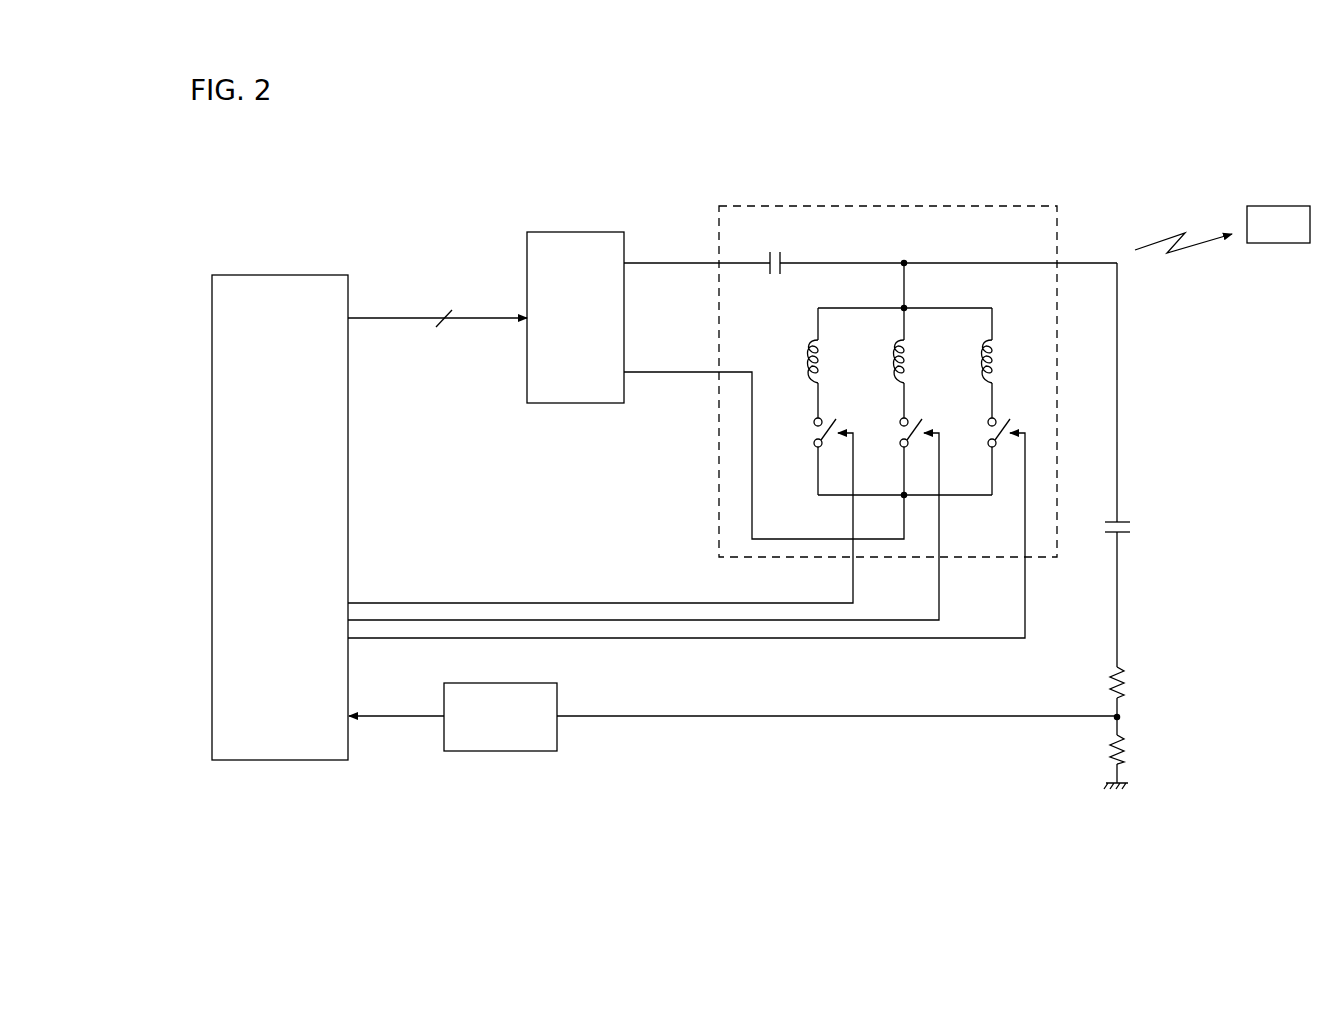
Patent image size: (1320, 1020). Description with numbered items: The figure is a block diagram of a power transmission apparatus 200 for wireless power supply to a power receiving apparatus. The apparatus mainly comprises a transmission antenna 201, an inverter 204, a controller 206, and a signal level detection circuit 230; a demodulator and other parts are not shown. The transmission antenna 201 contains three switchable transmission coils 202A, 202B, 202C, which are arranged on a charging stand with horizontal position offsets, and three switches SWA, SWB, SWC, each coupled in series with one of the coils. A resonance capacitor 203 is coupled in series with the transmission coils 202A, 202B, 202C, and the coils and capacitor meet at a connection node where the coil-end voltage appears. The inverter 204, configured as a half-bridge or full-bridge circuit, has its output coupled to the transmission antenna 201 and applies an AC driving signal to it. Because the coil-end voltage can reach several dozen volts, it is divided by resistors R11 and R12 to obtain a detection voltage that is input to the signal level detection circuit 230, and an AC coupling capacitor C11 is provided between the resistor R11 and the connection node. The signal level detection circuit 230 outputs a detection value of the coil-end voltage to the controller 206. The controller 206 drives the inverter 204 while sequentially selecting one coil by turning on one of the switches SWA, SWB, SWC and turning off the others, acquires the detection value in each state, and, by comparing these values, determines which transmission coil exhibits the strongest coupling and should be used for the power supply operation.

The power transmission apparatus 200 is at (1048, 94).
The transmission antenna 201 is at (873, 204).
The transmission coil 202A is at (805, 364).
The transmission coil 202B is at (891, 364).
The transmission coil 202C is at (978, 364).
The resonance capacitor 203 is at (773, 278).
The inverter 204 is at (565, 230).
The controller 206 is at (272, 273).
The signal level detection circuit 230 is at (505, 754).
The switch SWA is at (810, 433).
The switch SWB is at (896, 433).
The switch SWC is at (984, 433).
The AC coupling capacitor C11 is at (1136, 528).
The resistor R11 is at (1128, 686).
The resistor R12 is at (1128, 751).